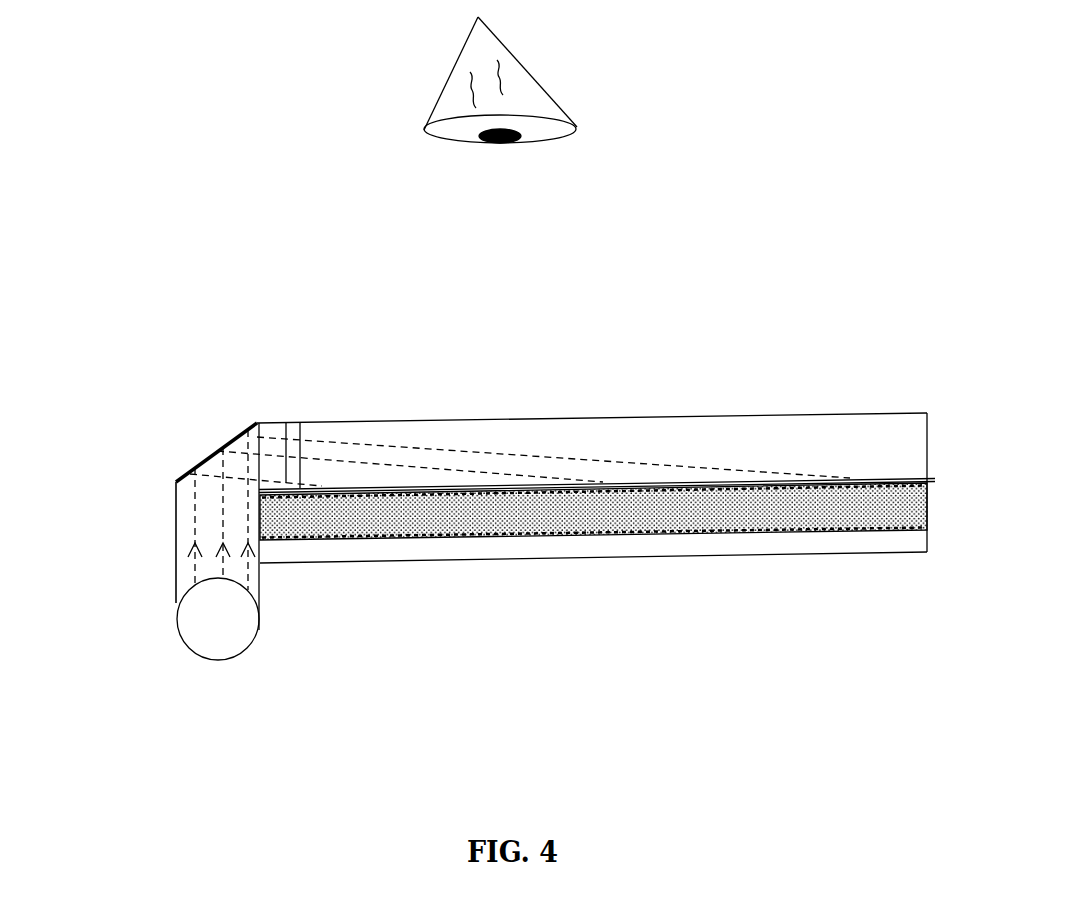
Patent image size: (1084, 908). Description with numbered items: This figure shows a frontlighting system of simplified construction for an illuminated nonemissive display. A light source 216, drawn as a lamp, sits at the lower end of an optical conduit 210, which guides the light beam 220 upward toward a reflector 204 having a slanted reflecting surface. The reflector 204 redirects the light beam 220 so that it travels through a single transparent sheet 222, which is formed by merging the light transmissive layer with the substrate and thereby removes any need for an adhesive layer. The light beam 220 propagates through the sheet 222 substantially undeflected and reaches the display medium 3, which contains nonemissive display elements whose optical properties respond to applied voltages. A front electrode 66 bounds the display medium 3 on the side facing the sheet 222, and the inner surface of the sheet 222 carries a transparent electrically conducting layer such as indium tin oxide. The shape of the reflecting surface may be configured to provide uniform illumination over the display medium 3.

The reflector 204 is at (200, 456).
The optical conduit 210 is at (168, 545).
The light source 216 is at (233, 620).
The light beam 220 is at (398, 462).
The transparent sheet 222 is at (655, 450).
The front electrode 66 is at (512, 488).
The display medium 3 is at (563, 513).